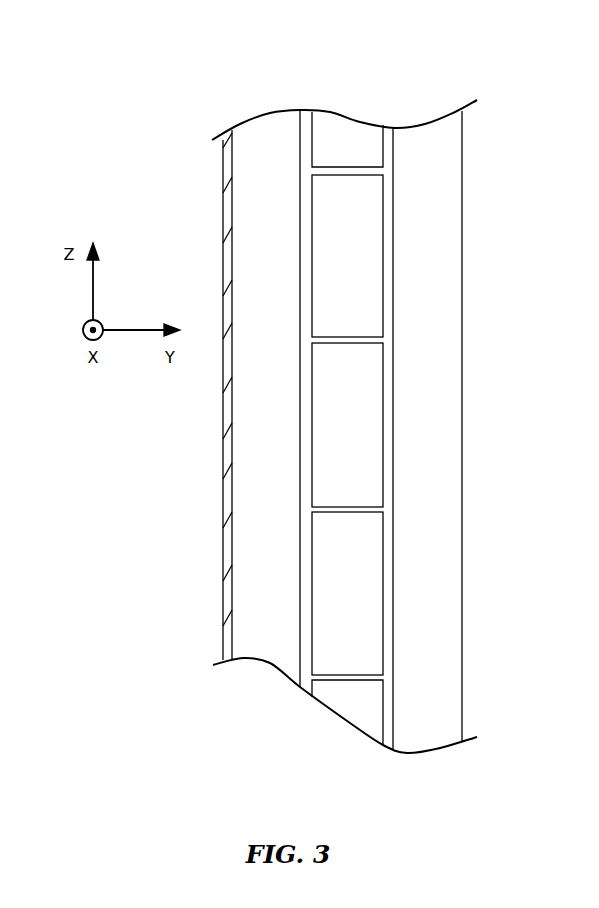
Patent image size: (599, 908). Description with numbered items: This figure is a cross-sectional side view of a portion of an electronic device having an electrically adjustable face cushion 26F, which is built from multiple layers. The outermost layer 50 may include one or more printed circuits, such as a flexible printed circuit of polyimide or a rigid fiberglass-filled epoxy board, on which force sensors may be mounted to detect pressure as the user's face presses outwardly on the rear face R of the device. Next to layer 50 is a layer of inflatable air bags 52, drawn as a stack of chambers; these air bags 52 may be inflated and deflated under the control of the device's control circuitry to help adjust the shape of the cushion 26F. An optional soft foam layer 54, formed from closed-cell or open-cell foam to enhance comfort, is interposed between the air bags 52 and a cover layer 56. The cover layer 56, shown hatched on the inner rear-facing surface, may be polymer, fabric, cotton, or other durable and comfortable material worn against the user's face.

The adjustable face cushion 26F is at (208, 85).
The layer 50 is at (425, 740).
The inflatable air bags 52 is at (345, 655).
The foam layer 54 is at (272, 657).
The cover layer 56 is at (227, 650).
The rear face R is at (196, 603).